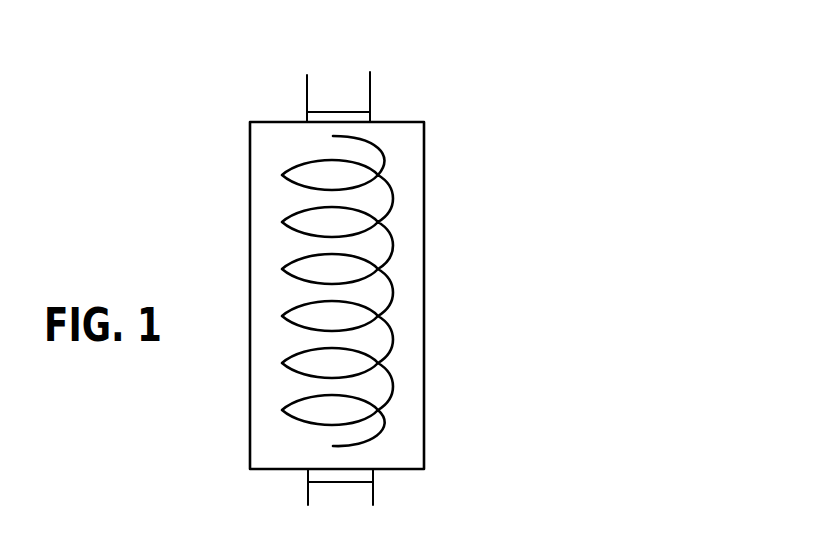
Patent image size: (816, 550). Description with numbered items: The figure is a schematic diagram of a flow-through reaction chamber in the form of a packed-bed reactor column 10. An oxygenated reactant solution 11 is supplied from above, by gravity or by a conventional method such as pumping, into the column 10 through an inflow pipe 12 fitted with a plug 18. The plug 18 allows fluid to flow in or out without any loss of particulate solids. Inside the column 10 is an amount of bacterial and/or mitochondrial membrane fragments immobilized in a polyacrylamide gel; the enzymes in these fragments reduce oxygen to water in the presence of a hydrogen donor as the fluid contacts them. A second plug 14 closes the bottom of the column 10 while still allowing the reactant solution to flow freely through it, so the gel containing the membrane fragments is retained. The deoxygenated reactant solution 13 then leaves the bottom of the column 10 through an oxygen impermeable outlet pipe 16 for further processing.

The reactor column 10 is at (250, 205).
The oxygenated reactant solution 11 is at (337, 87).
The inflow pipe 12 is at (374, 80).
The deoxygenated reactant solution 13 is at (338, 493).
The plug 14 is at (319, 474).
The oxygen impermeable outlet pipe 16 is at (373, 489).
The plug 18 is at (360, 117).